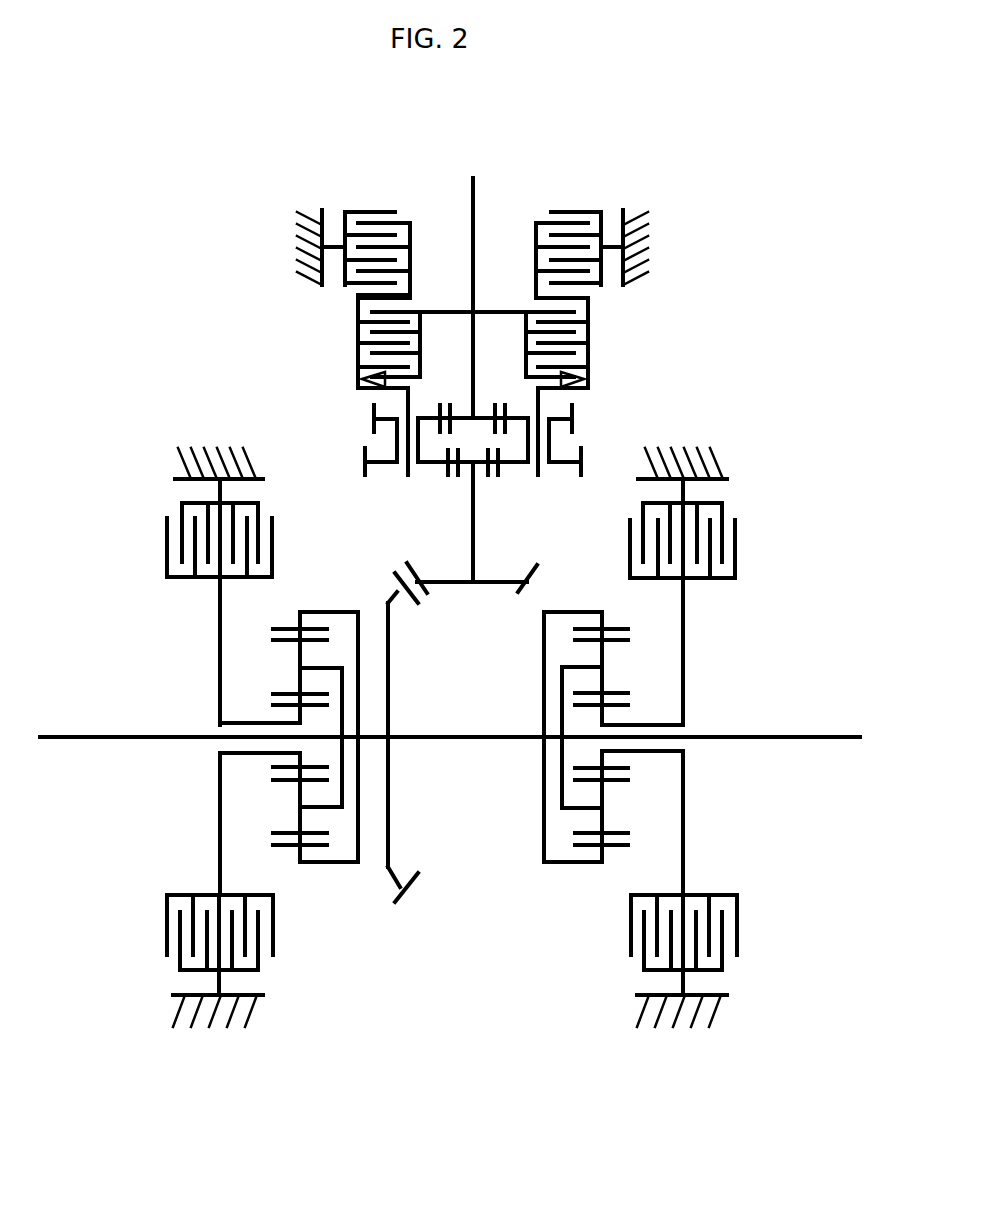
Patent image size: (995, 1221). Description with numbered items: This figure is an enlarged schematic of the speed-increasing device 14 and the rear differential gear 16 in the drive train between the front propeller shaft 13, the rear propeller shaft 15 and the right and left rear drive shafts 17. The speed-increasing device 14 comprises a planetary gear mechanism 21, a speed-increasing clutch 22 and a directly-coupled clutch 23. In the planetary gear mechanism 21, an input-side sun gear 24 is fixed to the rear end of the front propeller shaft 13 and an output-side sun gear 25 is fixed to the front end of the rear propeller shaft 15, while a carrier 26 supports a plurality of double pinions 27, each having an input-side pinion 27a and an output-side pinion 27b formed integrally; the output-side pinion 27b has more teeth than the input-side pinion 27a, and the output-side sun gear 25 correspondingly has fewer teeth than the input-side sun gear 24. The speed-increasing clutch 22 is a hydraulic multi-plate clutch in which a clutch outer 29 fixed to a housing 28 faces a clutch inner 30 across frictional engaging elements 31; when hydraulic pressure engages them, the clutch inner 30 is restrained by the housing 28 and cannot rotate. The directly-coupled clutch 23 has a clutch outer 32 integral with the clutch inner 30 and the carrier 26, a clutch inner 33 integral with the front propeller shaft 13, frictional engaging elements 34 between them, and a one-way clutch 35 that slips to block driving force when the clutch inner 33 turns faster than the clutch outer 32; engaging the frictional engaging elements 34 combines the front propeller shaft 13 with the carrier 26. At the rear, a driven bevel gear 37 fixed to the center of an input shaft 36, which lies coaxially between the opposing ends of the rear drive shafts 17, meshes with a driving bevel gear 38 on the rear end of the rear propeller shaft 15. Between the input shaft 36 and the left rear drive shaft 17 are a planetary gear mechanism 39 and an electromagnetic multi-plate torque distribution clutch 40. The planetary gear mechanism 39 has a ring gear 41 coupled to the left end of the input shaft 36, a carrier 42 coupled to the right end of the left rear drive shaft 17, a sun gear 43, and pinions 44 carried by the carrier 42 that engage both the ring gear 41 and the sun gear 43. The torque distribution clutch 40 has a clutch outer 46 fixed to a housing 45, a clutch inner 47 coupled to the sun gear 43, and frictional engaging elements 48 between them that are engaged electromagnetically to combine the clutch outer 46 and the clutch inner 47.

The front propeller shaft 13 is at (476, 200).
The speed-increasing device 14 is at (572, 170).
The rear propeller shaft 15 is at (476, 556).
The rear differential gear 16 is at (408, 960).
The right and left rear drive shafts 17 is at (116, 733).
The planetary gear mechanism 21 is at (582, 438).
The speed-increasing clutch 22 is at (578, 207).
The directly-coupled clutch 23 is at (603, 332).
The input-side sun gear 24 is at (489, 405).
The output-side sun gear 25 is at (486, 478).
The carrier 26 is at (410, 395).
The double pinion 27 is at (487, 465).
The input-side pinion 27a is at (372, 413).
The output-side pinion 27b is at (363, 462).
The housing 28 is at (300, 245).
The clutch outer 29 is at (343, 226).
The clutch inner 30 is at (382, 226).
The frictional engaging elements 31 is at (402, 260).
The clutch outer 32 is at (392, 319).
The clutch inner 33 is at (422, 370).
The frictional engaging elements 34 is at (412, 350).
The one-way clutch 35 is at (592, 372).
The input shaft 36 is at (456, 733).
The driven bevel gear 37 is at (393, 576).
The driving bevel gear 38 is at (410, 568).
The planetary gear mechanism 39 is at (451, 707).
The torque distribution clutch 40 is at (453, 535).
The ring gear 41 is at (272, 631).
The carrier 42 is at (344, 680).
The sun gear 43 is at (272, 704).
The pinions 44 is at (330, 640).
The housing 45 is at (218, 446).
The clutch outer 46 is at (180, 508).
The clutch inner 47 is at (208, 582).
The frictional engaging elements 48 is at (255, 560).